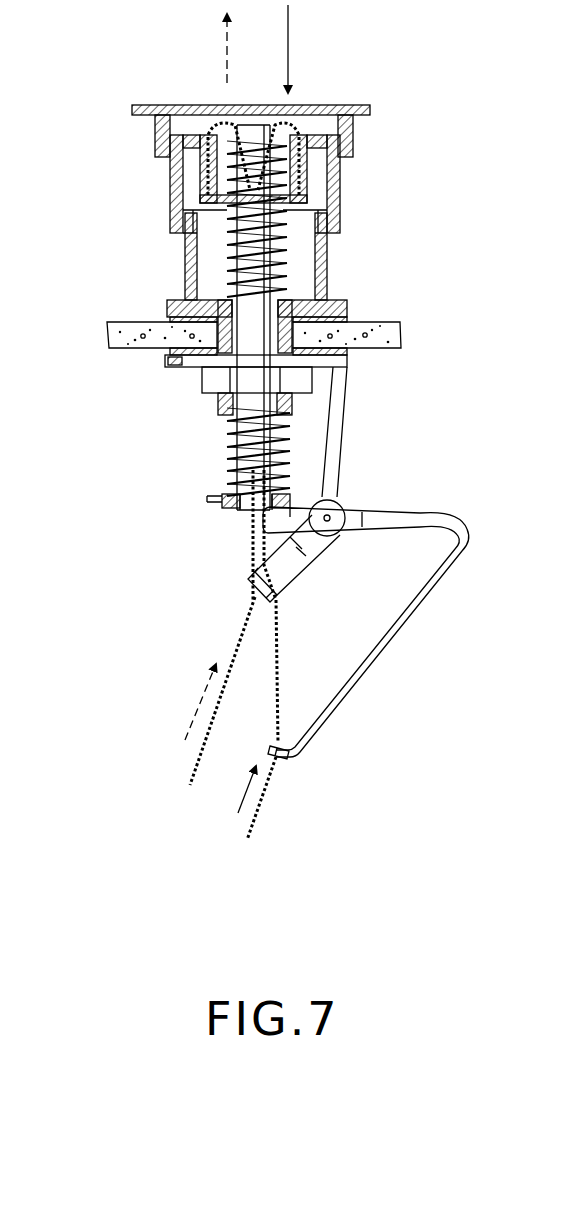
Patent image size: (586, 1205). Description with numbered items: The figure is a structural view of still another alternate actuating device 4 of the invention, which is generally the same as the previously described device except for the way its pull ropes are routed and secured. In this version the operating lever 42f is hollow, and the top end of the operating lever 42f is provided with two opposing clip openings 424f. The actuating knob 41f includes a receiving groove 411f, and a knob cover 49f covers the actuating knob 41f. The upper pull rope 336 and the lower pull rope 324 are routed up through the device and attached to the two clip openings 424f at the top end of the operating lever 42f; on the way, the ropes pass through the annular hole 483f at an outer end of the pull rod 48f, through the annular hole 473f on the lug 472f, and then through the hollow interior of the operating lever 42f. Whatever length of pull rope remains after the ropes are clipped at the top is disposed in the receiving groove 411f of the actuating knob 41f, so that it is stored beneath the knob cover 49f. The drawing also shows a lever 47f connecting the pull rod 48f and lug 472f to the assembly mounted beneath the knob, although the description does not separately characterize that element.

The actuating device 4 is at (82, 212).
The knob cover 49f is at (372, 108).
The actuating knob 41f is at (342, 193).
The receiving groove 411f is at (315, 161).
The operating lever 42f is at (280, 250).
The clip openings 424f is at (233, 123).
The lever 47f is at (343, 437).
The lug 472f is at (315, 553).
The annular hole 473f is at (258, 585).
The pull rod 48f is at (450, 575).
The annular hole 483f is at (282, 753).
The upper pull rope 336 is at (190, 770).
The lower pull rope 324 is at (253, 832).